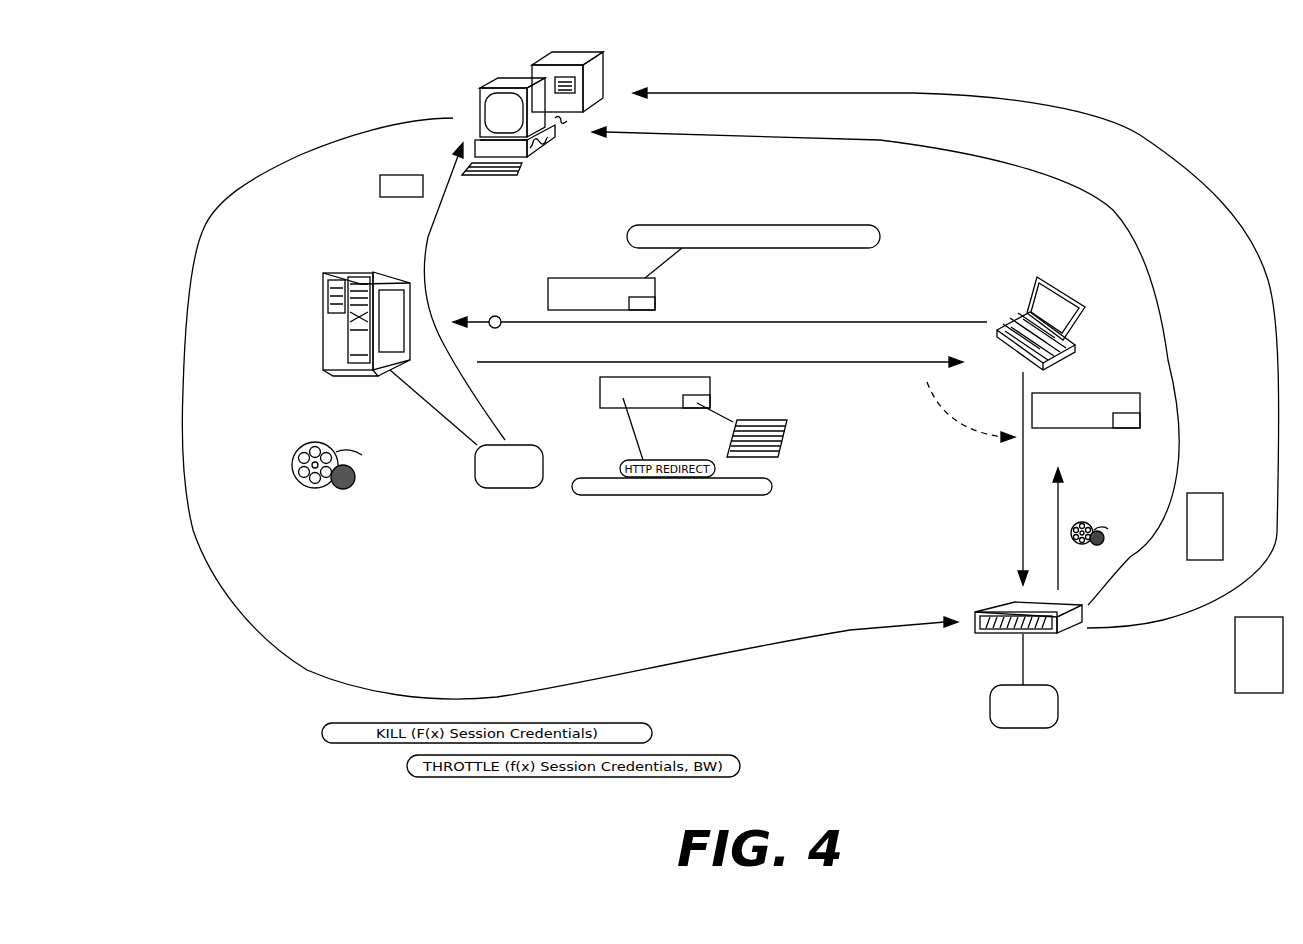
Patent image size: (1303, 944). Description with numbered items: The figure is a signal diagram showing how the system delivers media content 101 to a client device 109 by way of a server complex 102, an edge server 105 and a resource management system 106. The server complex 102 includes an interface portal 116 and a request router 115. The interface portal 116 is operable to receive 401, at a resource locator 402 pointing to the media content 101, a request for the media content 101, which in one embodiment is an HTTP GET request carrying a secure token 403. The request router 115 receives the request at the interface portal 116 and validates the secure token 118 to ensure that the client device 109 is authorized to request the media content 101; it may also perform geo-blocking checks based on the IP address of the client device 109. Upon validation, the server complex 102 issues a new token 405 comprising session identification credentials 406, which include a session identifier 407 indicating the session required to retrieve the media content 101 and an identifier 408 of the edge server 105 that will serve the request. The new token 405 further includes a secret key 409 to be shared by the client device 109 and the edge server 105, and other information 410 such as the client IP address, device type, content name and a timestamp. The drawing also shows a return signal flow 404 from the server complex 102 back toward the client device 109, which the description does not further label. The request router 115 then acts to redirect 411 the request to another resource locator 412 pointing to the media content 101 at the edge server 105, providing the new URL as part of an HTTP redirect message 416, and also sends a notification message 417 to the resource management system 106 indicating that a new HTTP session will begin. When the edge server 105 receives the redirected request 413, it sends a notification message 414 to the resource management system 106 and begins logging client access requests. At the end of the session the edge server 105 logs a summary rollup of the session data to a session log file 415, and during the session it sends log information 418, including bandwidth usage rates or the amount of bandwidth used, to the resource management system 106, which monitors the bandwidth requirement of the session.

The media content 101 is at (332, 442).
The server complex 102 is at (330, 327).
The edge server 105 is at (1013, 605).
The resource management system 106 is at (507, 85).
The client device 109 is at (1040, 307).
The request router 115 is at (512, 477).
The interface portal 116 is at (483, 300).
The secure token 118 is at (637, 295).
The receive 401 is at (693, 320).
The resource locator 402 is at (717, 233).
The secure token 403 is at (593, 287).
The response arrow 404 is at (735, 362).
The new token 405 is at (683, 400).
The session identification credentials 406 is at (757, 417).
The session identifier 407 is at (785, 427).
The identifier of edge server 408 is at (784, 432).
The secret key 409 is at (783, 438).
The other information 410 is at (781, 445).
The redirect 411 is at (935, 397).
The resource locator 412 is at (650, 490).
The redirected request 413 is at (1073, 403).
The notification message 414 is at (1205, 503).
The session log file 415 is at (1000, 707).
The HTTP redirect message 416 is at (603, 380).
The notification message 417 is at (400, 187).
The log information 418 is at (1250, 652).